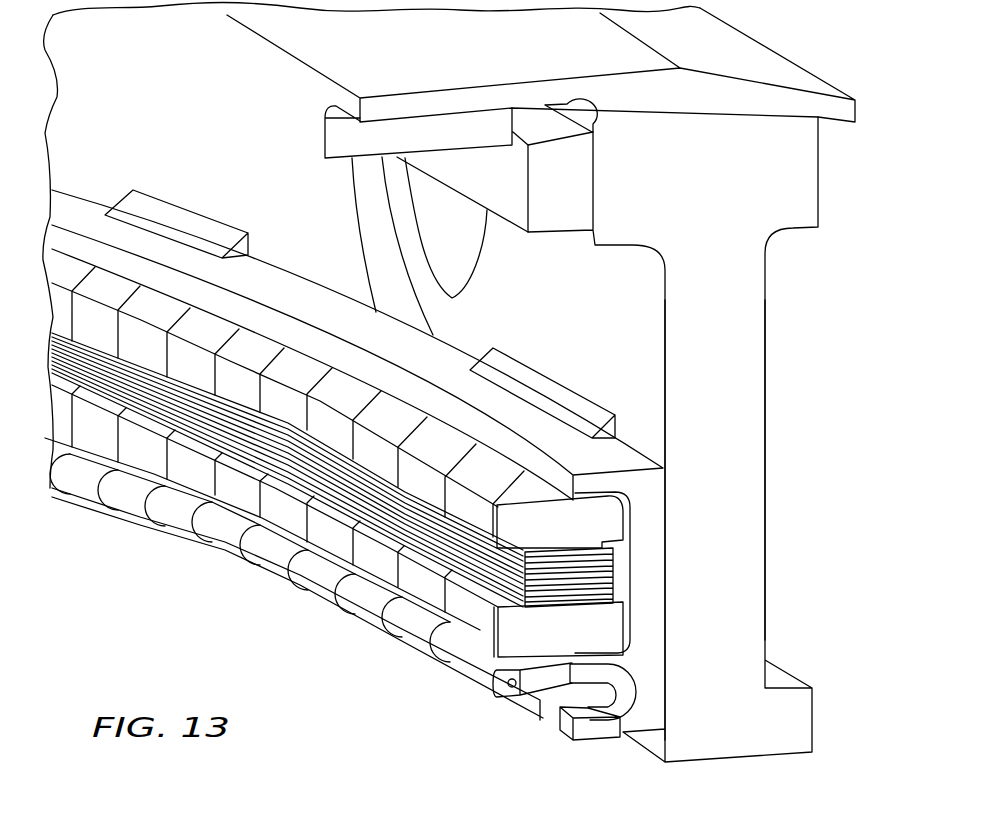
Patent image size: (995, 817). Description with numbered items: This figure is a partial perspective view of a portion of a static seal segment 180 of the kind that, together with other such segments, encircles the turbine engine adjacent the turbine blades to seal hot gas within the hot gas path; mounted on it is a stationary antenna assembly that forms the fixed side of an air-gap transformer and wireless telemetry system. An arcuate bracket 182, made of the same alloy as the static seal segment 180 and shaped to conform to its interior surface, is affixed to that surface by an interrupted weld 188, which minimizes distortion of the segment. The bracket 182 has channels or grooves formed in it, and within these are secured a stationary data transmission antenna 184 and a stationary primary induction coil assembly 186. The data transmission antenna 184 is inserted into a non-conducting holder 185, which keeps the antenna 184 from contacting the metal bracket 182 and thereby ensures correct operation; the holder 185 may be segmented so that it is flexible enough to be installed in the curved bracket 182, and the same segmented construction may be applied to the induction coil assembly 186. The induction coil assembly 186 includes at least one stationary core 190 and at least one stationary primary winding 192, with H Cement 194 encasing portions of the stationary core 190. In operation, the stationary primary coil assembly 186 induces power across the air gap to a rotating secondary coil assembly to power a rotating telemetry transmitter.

The static seal segment 180 is at (728, 173).
The arcuate bracket 182 is at (648, 603).
The data transmission antenna 184 is at (515, 687).
The non-conducting holder 185 is at (410, 632).
The primary induction coil assembly 186 is at (497, 633).
The interrupted weld 188 is at (180, 205).
The stationary core 190 is at (605, 640).
The stationary primary winding 192 is at (357, 500).
The H Cement 194 is at (300, 352).